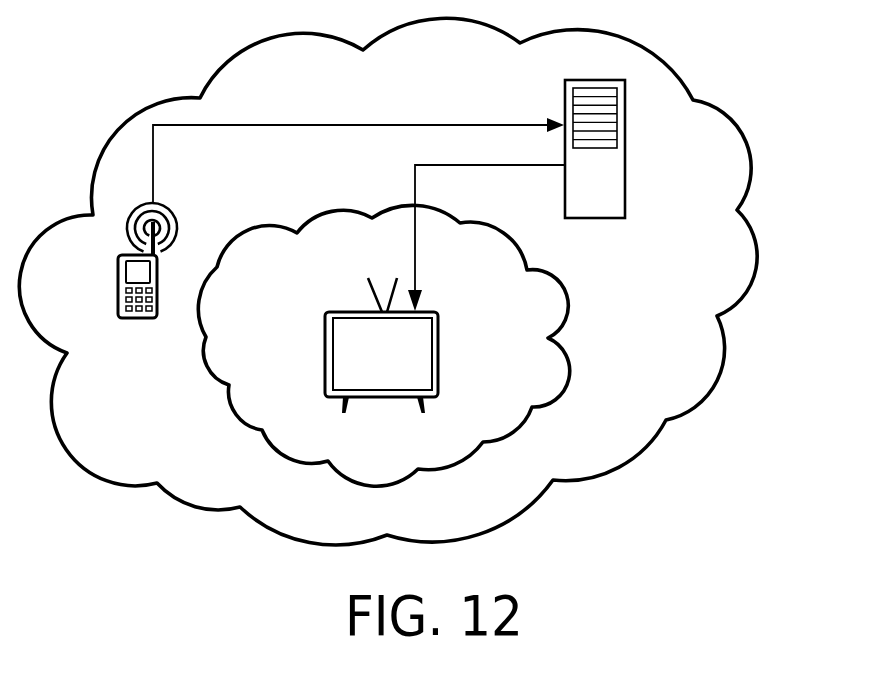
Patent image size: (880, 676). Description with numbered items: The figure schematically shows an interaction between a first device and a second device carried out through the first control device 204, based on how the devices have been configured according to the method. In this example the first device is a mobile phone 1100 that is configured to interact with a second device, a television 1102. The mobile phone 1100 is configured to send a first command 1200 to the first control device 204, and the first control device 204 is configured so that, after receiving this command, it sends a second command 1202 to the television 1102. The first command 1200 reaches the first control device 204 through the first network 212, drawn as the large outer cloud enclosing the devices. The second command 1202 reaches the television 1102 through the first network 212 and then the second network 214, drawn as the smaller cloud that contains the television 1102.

The first network 212 is at (732, 350).
The second network 214 is at (570, 300).
The first control device 204 is at (628, 185).
The mobile phone 1100 is at (138, 320).
The television 1102 is at (327, 353).
The first command 1200 is at (292, 125).
The second command 1202 is at (413, 187).